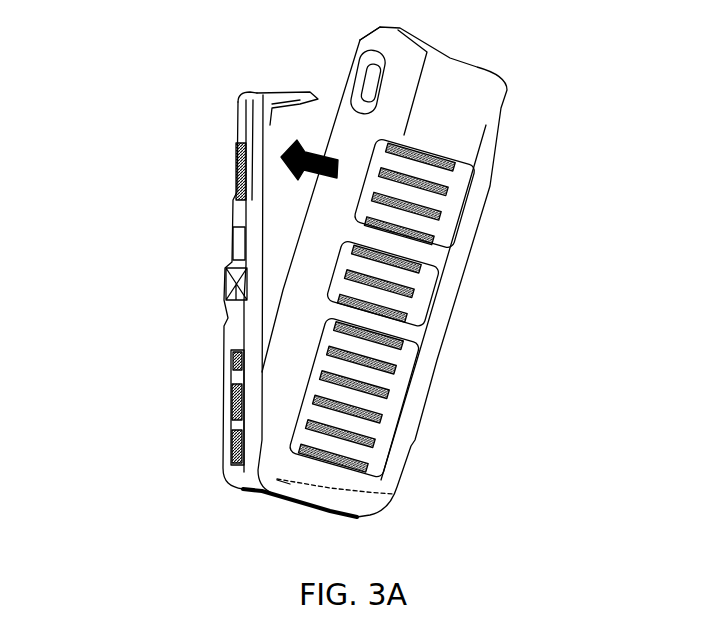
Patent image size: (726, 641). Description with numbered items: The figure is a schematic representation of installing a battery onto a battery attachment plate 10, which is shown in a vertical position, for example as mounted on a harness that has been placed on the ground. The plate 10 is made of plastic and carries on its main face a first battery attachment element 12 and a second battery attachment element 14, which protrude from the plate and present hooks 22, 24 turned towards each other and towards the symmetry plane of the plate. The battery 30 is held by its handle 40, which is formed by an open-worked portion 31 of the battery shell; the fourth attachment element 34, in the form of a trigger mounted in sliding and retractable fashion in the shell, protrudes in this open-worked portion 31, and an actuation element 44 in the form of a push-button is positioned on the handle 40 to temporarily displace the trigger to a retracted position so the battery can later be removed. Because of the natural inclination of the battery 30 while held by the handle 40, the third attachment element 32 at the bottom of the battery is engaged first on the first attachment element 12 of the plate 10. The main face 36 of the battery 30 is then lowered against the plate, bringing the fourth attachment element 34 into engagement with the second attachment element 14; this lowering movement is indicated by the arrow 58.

The battery attachment plate 10 is at (213, 286).
The first battery attachment element 12 is at (252, 487).
The second battery attachment element 14 is at (263, 90).
The hook 22 is at (280, 492).
The hook 24 is at (236, 143).
The battery 30 is at (427, 355).
The open-worked portion 31 is at (356, 75).
The third attachment element 32 is at (393, 494).
The fourth attachment element 34 is at (383, 110).
The main face 36 is at (310, 310).
The handle 40 is at (360, 40).
The actuation element 44 is at (408, 29).
The arrow 58 is at (300, 140).